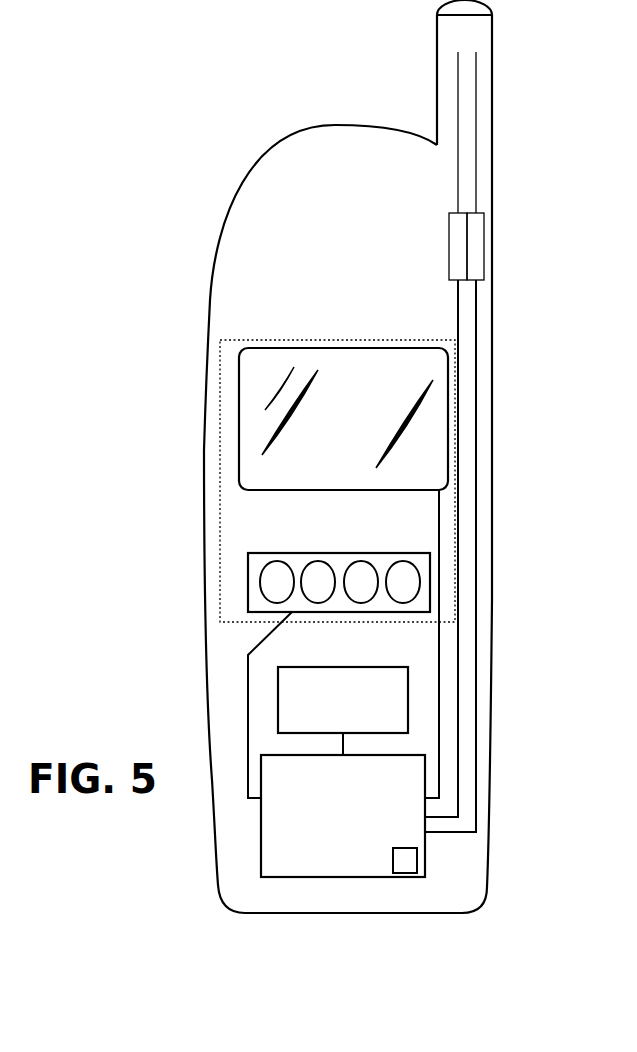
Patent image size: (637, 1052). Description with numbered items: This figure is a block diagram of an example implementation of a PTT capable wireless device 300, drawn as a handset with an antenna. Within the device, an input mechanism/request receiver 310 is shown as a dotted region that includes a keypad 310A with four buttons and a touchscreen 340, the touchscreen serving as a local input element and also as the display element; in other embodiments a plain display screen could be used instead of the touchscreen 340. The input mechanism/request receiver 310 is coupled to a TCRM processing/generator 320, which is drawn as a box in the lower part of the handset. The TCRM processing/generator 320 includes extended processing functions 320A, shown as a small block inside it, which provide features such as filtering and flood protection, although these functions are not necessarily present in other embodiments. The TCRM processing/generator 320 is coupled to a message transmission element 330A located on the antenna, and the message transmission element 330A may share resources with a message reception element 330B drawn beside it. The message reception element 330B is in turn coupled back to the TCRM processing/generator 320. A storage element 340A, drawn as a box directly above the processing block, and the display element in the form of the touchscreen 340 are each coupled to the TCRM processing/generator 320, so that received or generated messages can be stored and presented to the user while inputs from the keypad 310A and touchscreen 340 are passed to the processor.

The PTT capable wireless device 300 is at (140, 155).
The input mechanism/request receiver 310 is at (258, 340).
The keypad 310A is at (248, 577).
The TCRM processing/generator 320 is at (363, 866).
The extended processing functions 320A is at (406, 860).
The message transmission element 330A is at (475, 228).
The message reception element 330B is at (457, 263).
The touchscreen 340 is at (250, 465).
The storage element 340A is at (368, 723).